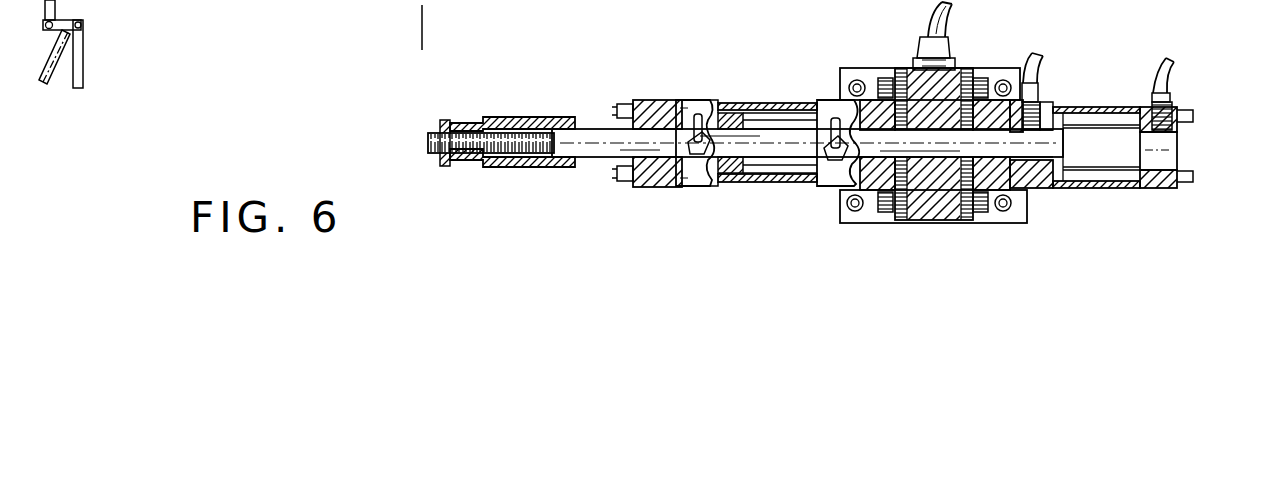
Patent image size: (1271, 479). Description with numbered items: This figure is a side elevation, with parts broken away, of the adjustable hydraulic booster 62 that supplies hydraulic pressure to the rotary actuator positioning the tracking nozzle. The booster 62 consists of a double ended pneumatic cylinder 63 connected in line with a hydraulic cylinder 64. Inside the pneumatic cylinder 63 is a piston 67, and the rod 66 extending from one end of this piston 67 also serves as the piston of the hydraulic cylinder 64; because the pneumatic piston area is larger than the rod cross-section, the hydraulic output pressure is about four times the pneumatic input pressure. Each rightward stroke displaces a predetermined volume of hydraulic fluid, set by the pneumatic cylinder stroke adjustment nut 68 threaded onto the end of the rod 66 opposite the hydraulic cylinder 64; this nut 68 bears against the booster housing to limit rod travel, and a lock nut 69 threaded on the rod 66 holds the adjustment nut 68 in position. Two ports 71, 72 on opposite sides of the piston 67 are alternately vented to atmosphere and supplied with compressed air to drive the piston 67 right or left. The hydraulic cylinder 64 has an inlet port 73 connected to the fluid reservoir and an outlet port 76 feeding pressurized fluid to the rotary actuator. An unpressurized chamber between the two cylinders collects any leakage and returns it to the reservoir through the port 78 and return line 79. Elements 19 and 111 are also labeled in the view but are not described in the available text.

The link arm 19 is at (176, 0).
The adjustable booster 62 is at (804, 90).
The double ended pneumatic cylinder 63 is at (735, 102).
The hydraulic cylinder 64 is at (1104, 108).
The rod 66 is at (1052, 138).
The piston 67 is at (750, 106).
The pneumatic cylinder stroke adjustment nut 68 is at (533, 117).
The lock nut 69 is at (441, 120).
The port 71 is at (704, 163).
The port 72 is at (838, 162).
The inlet port 73 is at (1173, 100).
The outlet port 76 is at (1042, 103).
The port 78 is at (948, 58).
The return line 79 is at (946, 24).
The hose 111 is at (1174, 63).